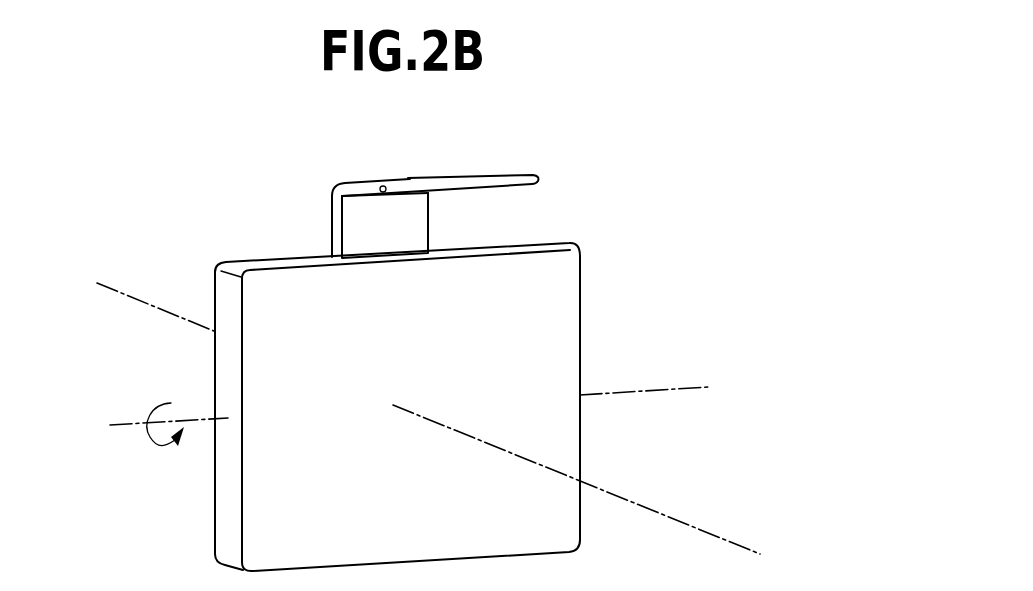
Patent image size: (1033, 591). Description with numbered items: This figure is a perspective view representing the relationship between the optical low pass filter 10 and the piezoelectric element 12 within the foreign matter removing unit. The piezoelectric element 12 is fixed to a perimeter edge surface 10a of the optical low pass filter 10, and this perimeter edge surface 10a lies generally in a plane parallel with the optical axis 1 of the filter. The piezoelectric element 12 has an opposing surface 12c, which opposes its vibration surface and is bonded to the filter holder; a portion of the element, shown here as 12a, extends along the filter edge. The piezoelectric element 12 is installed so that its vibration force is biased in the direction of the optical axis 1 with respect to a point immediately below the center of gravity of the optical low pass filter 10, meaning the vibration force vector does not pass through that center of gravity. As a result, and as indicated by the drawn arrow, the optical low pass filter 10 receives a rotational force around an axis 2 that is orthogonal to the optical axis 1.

The optical axis 1 is at (670, 513).
The axis 2 is at (138, 425).
The optical low pass filter 10 is at (530, 327).
The perimeter edge surface 10a is at (537, 249).
The piezoelectric element 12 is at (397, 233).
The arm 12a is at (533, 175).
The opposing surface 12c is at (355, 182).